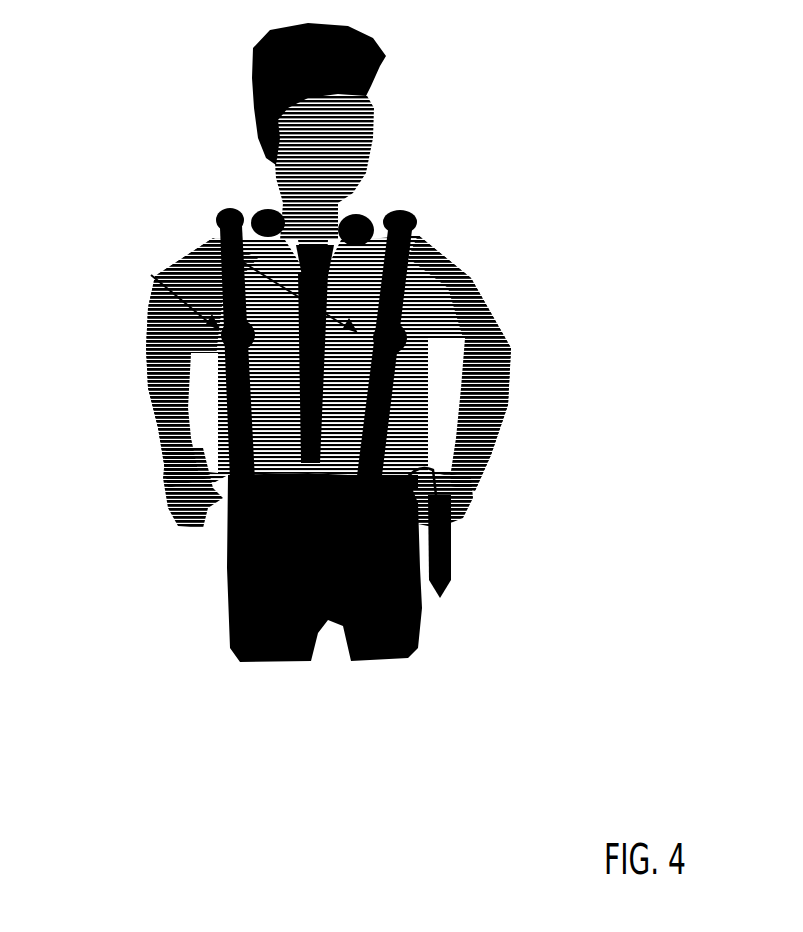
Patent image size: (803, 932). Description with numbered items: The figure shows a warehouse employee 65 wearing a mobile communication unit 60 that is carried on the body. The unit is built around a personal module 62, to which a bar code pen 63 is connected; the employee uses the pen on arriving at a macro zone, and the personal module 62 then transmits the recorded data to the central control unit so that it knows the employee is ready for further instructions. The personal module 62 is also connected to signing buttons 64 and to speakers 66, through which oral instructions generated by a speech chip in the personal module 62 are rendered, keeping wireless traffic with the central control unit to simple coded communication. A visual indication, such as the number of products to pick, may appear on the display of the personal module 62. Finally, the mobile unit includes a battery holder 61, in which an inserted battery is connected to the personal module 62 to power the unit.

The mobile communication unit 60 is at (217, 490).
The battery holder 61 is at (217, 543).
The personal module 62 is at (380, 653).
The bar code pen 63 is at (443, 563).
The signing buttons 64 is at (217, 343).
The warehouse employee 65 is at (440, 262).
The speakers 66 is at (397, 205).